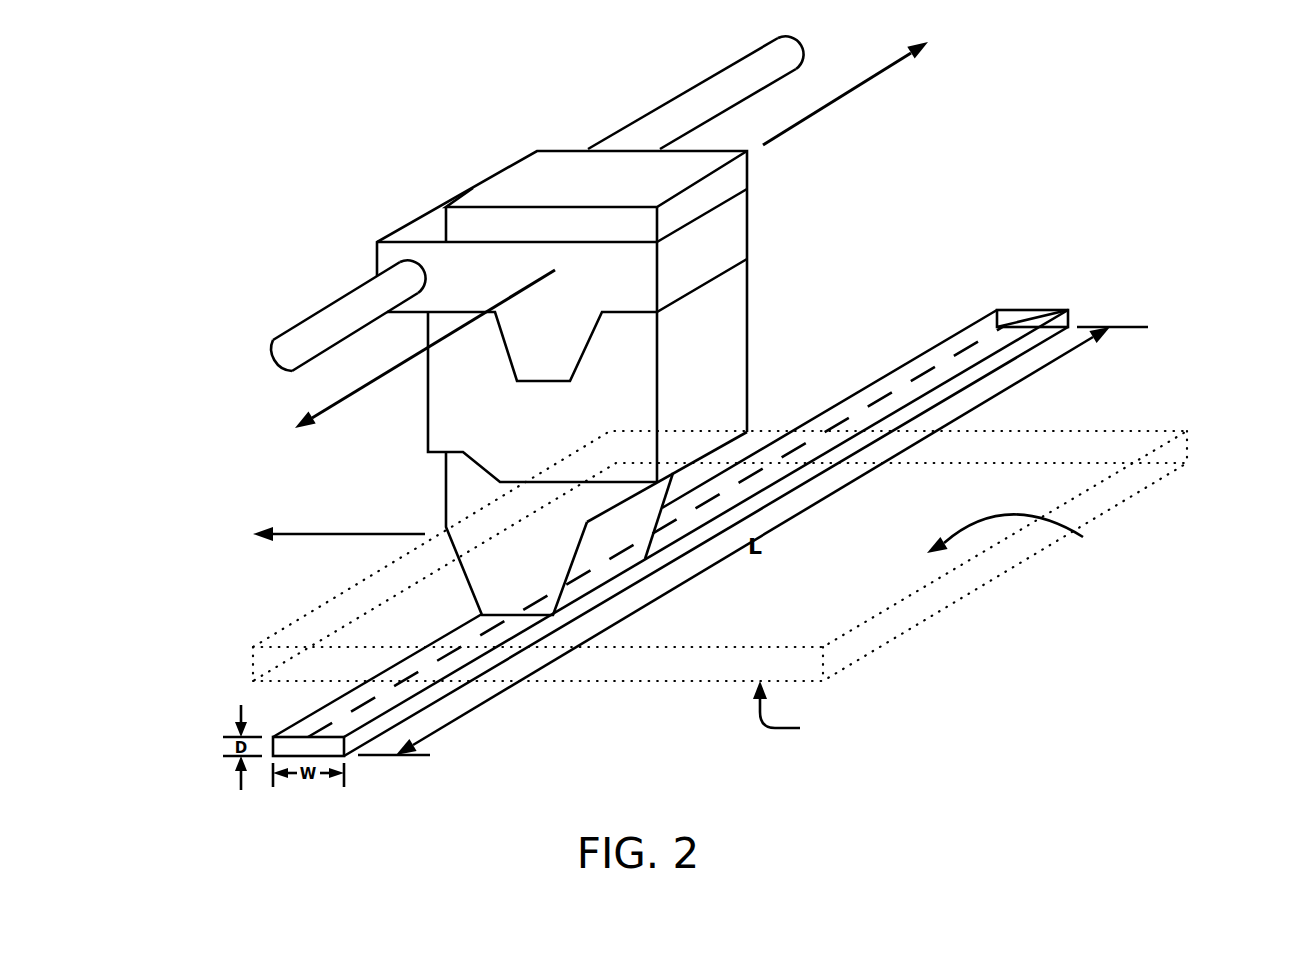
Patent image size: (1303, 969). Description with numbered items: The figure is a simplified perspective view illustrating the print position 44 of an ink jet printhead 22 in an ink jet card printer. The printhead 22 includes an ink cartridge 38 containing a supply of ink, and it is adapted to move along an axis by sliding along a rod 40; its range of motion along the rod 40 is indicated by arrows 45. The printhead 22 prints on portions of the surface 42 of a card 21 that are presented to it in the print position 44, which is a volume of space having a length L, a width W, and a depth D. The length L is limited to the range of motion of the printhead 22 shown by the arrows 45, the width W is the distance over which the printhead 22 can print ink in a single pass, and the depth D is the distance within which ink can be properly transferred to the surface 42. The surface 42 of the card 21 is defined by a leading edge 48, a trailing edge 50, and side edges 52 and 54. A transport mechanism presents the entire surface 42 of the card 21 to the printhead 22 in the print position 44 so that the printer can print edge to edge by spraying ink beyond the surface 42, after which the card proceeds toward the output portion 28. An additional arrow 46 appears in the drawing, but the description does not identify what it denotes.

The card 21 is at (1145, 431).
The ink jet printhead 22 is at (483, 582).
The output portion 28 is at (796, 713).
The ink cartridge 38 is at (727, 177).
The rod 40 is at (702, 80).
The surface 42 is at (1023, 533).
The print position 44 is at (1033, 308).
The arrows 45 is at (857, 90).
The direction arrow 46 is at (305, 533).
The leading edge 48 is at (267, 630).
The trailing edge 50 is at (935, 600).
The side edge 52 is at (1052, 425).
The side edge 54 is at (670, 662).